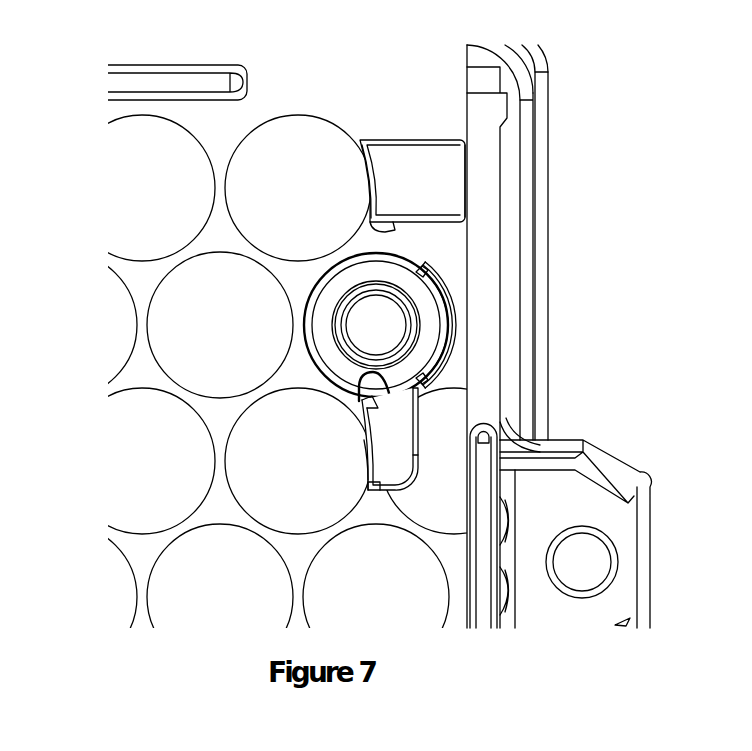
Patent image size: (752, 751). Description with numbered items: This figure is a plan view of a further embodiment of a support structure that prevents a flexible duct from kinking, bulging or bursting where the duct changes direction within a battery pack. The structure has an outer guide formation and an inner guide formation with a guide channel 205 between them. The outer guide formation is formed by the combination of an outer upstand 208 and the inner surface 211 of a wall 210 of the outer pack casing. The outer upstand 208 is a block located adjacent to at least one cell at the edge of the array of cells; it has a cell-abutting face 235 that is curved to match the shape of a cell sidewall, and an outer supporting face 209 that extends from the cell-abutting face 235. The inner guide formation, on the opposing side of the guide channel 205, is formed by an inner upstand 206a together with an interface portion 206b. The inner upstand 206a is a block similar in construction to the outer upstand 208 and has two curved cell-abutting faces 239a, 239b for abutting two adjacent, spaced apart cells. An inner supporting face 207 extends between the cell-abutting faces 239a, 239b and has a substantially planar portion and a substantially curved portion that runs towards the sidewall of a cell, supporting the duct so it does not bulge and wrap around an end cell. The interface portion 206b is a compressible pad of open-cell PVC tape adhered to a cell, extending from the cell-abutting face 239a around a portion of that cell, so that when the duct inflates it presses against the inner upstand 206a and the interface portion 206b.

The guide channel 205 is at (438, 252).
The inner upstand 206a is at (402, 438).
The interface portion 206b is at (458, 328).
The inner supporting face 207 is at (423, 447).
The outer upstand 208 is at (427, 162).
The outer supporting face 209 is at (390, 231).
The wall 210 is at (480, 145).
The inner surface 211 is at (467, 238).
The cell-abutting face 235 is at (366, 178).
The cell-abutting face 239a is at (362, 393).
The cell-abutting face 239b is at (370, 449).